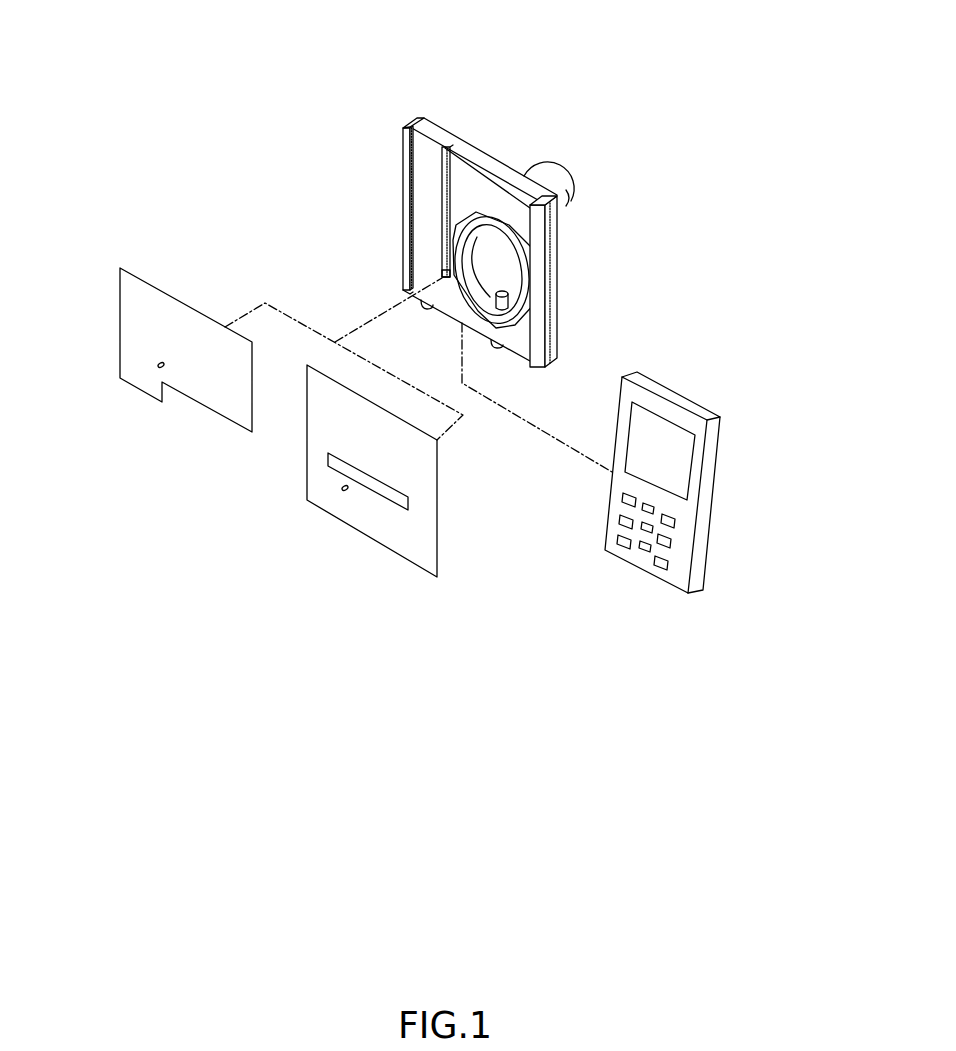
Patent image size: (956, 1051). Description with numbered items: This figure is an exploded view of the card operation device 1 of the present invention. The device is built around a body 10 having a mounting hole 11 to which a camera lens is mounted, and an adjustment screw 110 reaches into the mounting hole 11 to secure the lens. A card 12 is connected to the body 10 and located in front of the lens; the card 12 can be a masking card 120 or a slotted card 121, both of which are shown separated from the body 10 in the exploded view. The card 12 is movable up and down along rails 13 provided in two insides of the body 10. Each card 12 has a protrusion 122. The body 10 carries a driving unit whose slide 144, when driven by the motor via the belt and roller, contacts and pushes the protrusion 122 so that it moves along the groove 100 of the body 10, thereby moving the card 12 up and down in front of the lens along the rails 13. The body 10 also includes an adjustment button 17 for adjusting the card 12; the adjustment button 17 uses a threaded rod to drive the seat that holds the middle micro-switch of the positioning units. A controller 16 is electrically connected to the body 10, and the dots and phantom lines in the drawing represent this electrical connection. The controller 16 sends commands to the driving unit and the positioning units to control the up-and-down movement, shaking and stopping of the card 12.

The card operation device 1 is at (343, 233).
The body 10 is at (477, 147).
The mounting hole 11 is at (508, 275).
The adjustment screw 110 is at (510, 298).
The card 12 is at (314, 532).
The masking card 120 is at (181, 301).
The slotted card 121 is at (438, 530).
The protrusion 122 is at (157, 369).
The rails 13 is at (407, 147).
The groove 100 is at (448, 190).
The slide 144 is at (448, 275).
The controller 16 is at (718, 467).
The adjustment button 17 is at (427, 308).